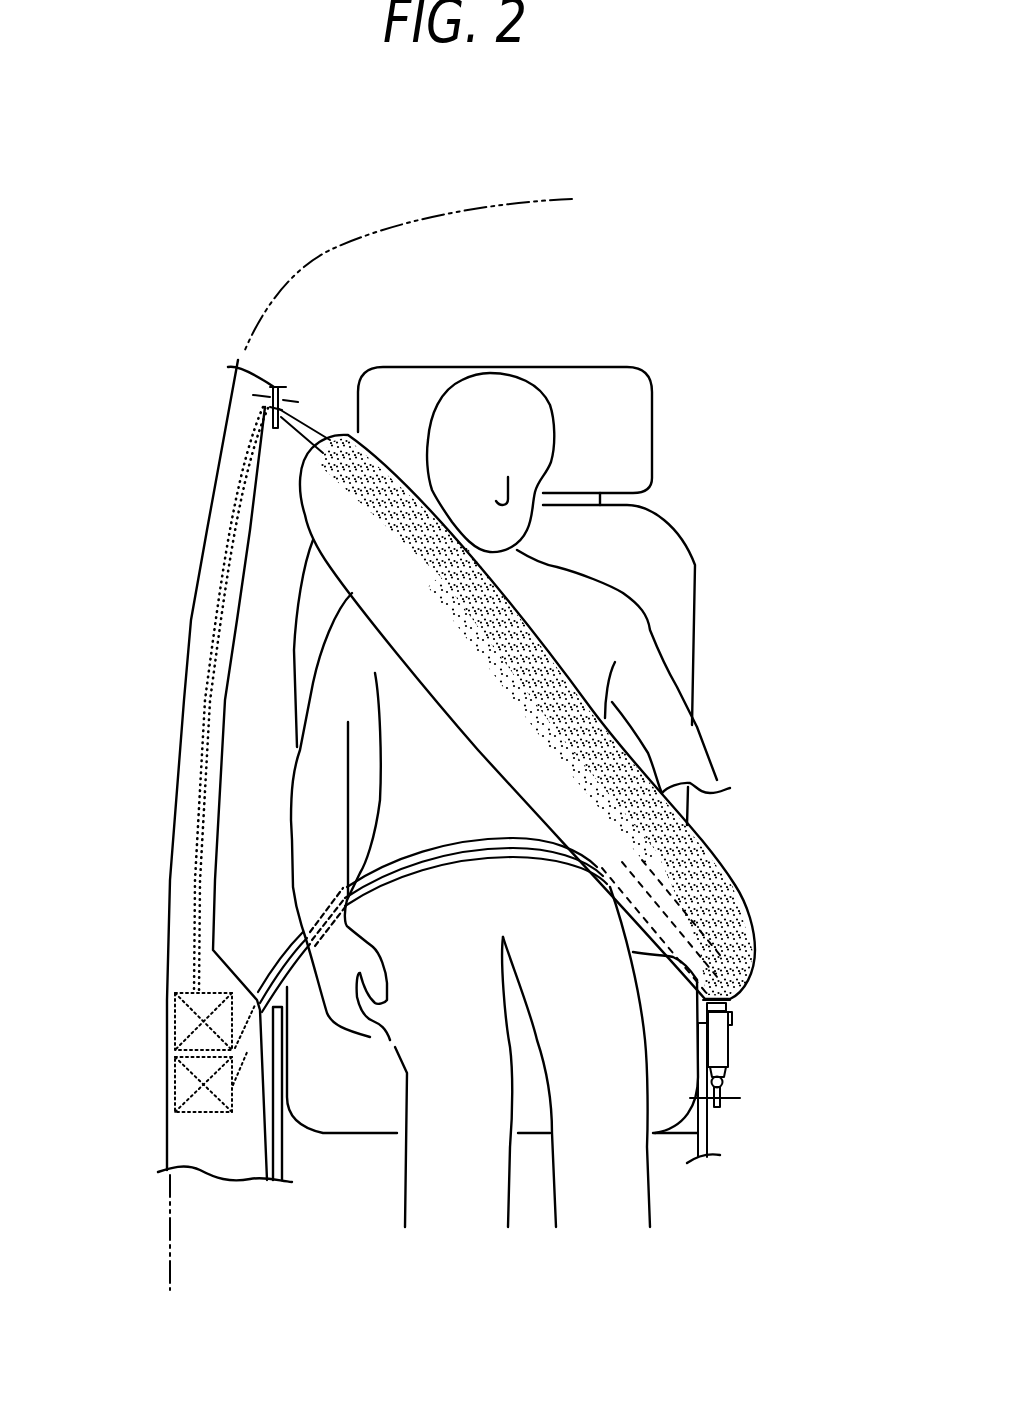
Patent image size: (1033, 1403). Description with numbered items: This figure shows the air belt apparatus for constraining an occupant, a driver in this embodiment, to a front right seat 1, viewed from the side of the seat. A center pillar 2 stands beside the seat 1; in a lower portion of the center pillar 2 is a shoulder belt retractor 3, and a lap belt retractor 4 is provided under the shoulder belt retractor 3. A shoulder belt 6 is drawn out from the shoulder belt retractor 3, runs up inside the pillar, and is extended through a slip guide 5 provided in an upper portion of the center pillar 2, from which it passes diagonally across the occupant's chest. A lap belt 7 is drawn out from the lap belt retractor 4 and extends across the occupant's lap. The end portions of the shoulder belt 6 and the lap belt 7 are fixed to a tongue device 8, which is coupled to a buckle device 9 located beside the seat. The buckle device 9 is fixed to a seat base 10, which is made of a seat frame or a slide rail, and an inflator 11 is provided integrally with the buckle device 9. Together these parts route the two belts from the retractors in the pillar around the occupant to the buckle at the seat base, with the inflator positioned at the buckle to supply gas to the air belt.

The front right seat 1 is at (712, 606).
The center pillar 2 is at (193, 693).
The shoulder belt retractor 3 is at (170, 1000).
The lap belt retractor 4 is at (168, 1105).
The slip guide 5 is at (275, 435).
The shoulder belt 6 is at (528, 645).
The lap belt 7 is at (438, 860).
The tongue device 8 is at (734, 996).
The buckle device 9 is at (735, 1041).
The seat base 10 is at (707, 1140).
The inflator 11 is at (723, 1080).